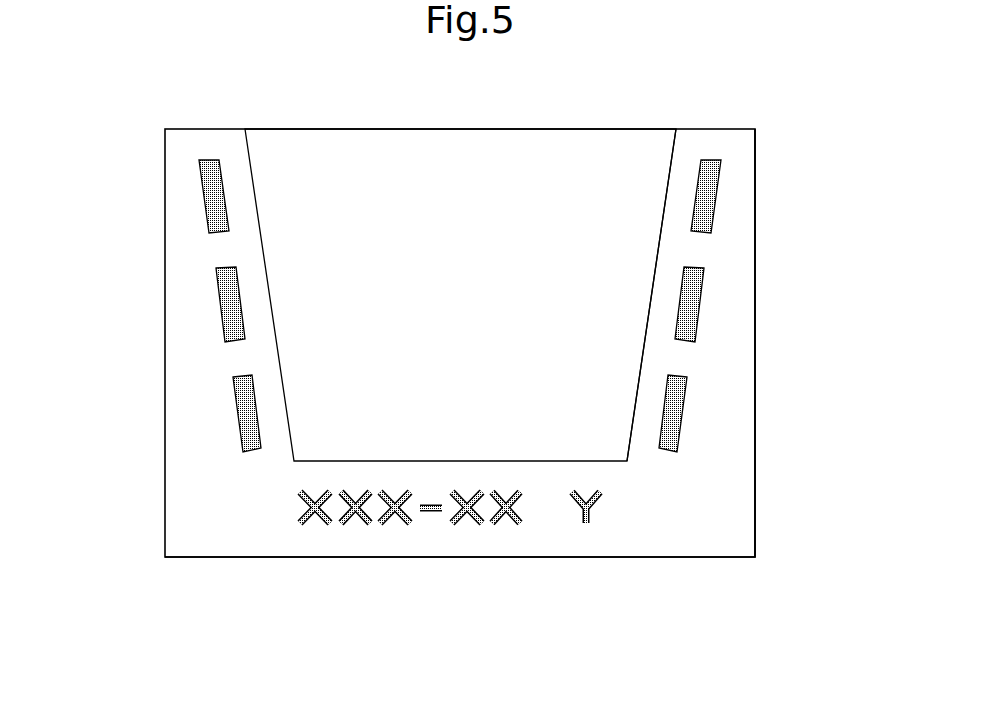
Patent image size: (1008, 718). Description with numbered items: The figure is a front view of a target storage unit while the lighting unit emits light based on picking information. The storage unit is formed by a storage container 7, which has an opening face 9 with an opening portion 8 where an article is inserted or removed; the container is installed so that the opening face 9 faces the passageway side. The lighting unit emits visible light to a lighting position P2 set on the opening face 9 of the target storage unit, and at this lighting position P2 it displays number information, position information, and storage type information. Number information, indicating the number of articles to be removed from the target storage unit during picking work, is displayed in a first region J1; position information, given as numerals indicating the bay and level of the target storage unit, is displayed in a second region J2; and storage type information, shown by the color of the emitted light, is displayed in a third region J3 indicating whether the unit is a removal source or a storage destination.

The storage container 7 is at (647, 110).
The opening portion 8 is at (661, 223).
The opening face 9 is at (729, 493).
The lighting position P2 is at (728, 410).
The third region J3 is at (185, 342).
The second region J2 is at (431, 542).
The first region J1 is at (596, 533).